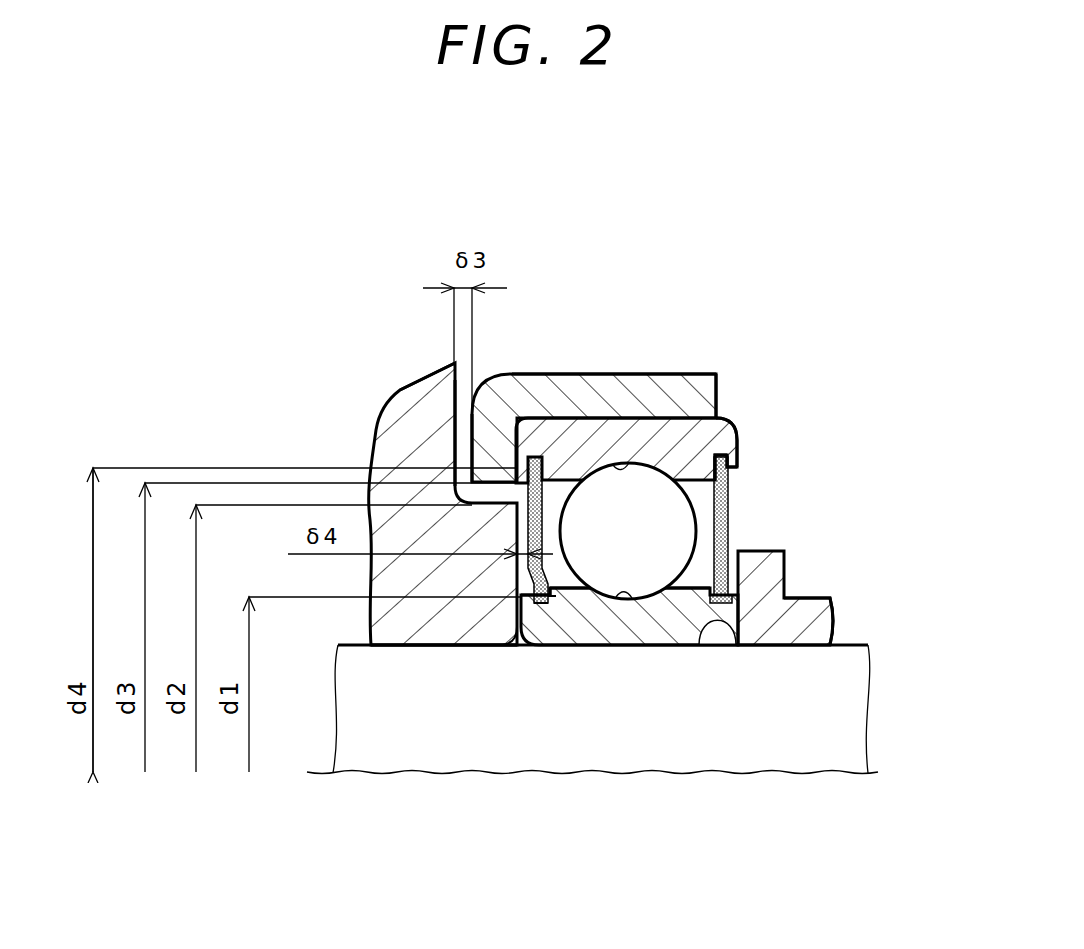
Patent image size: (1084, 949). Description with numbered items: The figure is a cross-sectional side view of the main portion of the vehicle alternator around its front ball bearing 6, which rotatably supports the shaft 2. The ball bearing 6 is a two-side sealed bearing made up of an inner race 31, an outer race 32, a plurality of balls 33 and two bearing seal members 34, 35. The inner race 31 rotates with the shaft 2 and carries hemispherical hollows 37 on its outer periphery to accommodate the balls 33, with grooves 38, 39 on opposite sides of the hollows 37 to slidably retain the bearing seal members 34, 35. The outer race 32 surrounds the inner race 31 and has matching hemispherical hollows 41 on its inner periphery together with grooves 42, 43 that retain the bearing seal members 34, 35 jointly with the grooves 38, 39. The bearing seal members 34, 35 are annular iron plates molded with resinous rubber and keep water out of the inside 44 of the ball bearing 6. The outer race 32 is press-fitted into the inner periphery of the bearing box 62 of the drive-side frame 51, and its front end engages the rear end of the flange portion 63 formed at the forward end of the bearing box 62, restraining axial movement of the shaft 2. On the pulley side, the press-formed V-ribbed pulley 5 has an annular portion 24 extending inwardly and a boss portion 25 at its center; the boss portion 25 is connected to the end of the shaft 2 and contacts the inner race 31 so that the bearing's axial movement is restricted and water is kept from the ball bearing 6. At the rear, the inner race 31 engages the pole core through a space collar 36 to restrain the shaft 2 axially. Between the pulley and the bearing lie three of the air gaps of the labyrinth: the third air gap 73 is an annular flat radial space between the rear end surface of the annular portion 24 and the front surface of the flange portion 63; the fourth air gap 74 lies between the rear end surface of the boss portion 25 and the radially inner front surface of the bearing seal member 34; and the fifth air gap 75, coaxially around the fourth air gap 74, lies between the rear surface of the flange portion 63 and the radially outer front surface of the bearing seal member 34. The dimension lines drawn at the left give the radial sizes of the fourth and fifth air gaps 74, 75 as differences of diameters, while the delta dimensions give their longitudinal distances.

The shaft 2 is at (665, 735).
The V-ribbed pulley 5 is at (390, 382).
The ball bearing 6 is at (738, 420).
The annular portion 24 is at (418, 392).
The boss portion 25 is at (443, 628).
The inner race 31 is at (770, 580).
The outer race 32 is at (717, 430).
The balls 33 is at (730, 470).
The bearing seal member 34 is at (515, 600).
The bearing seal member 35 is at (728, 505).
The space collar 36 is at (818, 623).
The hemispherical hollows 37 is at (630, 600).
The groove 38 is at (547, 604).
The groove 39 is at (720, 618).
The hemispherical hollows 41 is at (610, 464).
The groove 42 is at (546, 458).
The groove 43 is at (717, 457).
The inside of the bearing 44 is at (700, 558).
The drive-side frame 51 is at (705, 363).
The bearing box 62 is at (643, 385).
The flange portion 63 is at (487, 448).
The third air gap 73 is at (453, 418).
The fourth air gap 74 is at (572, 598).
The fifth air gap 75 is at (527, 466).